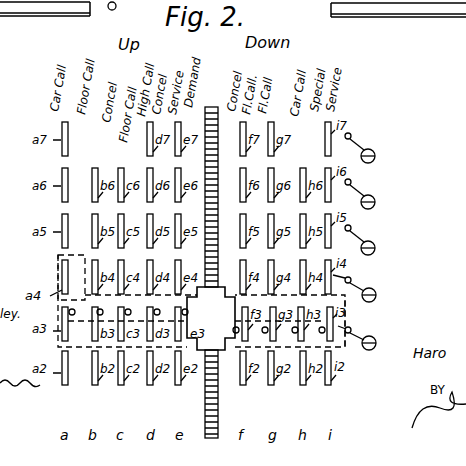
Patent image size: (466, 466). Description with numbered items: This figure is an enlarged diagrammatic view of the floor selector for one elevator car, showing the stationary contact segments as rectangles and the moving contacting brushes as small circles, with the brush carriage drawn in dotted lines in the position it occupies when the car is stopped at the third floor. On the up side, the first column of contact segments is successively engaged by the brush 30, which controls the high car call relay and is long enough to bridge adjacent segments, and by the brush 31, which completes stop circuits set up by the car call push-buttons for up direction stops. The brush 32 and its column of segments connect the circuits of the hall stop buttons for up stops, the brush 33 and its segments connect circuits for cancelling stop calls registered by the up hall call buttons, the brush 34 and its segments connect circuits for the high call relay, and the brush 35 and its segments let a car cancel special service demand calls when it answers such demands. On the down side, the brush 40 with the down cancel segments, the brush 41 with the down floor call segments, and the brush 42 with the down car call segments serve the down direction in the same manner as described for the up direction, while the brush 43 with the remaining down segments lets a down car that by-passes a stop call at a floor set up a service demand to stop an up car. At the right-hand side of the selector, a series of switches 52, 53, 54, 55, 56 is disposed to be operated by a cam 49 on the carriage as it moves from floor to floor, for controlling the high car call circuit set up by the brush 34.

The brush 30 is at (60, 272).
The brush 31 is at (79, 314).
The brush 32 is at (107, 306).
The brush 33 is at (135, 306).
The brush 34 is at (165, 306).
The brush 35 is at (192, 306).
The brush 40 is at (235, 327).
The brush 41 is at (258, 333).
The brush 42 is at (288, 333).
The brush 43 is at (316, 333).
The cam 49 is at (350, 316).
The switch 52 is at (377, 344).
The switch 53 is at (377, 296).
The switch 54 is at (376, 252).
The switch 55 is at (376, 206).
The switch 56 is at (376, 160).